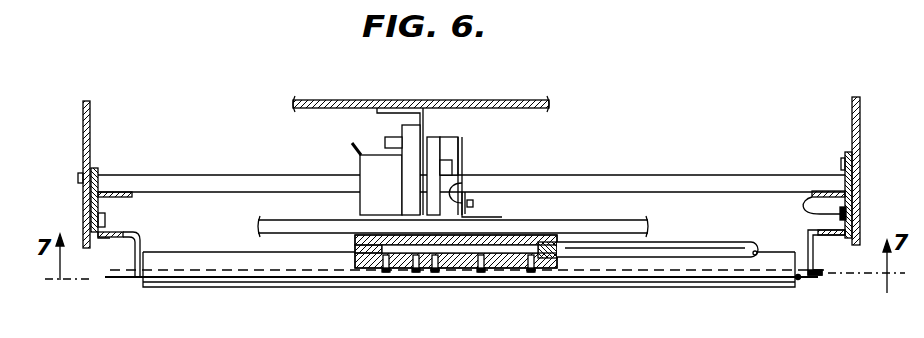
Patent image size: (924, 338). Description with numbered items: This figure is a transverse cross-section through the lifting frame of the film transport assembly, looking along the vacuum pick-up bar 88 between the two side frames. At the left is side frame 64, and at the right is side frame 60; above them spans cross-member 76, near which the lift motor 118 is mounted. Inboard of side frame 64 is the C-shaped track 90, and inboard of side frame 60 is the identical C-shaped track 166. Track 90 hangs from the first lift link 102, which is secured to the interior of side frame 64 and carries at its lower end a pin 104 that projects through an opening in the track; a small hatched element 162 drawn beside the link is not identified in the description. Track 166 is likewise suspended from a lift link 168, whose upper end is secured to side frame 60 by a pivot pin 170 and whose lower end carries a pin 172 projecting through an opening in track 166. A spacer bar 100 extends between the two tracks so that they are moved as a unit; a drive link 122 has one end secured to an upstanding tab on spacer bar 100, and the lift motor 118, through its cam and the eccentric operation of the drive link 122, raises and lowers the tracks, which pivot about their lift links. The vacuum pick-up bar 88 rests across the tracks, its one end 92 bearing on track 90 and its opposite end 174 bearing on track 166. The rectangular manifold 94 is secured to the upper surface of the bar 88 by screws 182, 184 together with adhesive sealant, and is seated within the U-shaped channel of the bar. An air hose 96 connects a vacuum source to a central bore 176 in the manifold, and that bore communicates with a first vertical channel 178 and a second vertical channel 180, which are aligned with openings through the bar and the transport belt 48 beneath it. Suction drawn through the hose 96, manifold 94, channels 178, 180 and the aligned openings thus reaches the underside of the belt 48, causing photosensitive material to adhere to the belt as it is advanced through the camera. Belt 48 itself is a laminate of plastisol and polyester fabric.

The belt 48 is at (798, 281).
The side frame 60 is at (860, 178).
The side frame 64 is at (83, 160).
The cross-member 76 is at (492, 103).
The vacuum pick-up bar 88 is at (620, 262).
The track 90 is at (100, 240).
The end of vacuum pick-up bar 92 is at (135, 228).
The manifold 94 is at (523, 235).
The air hose 96 is at (680, 250).
The spacer bar 100 is at (633, 210).
The first lift link 102 is at (94, 170).
The pin 104 is at (104, 220).
The lift motor 118 is at (362, 205).
The drive link 122 is at (457, 183).
The spacer 162 is at (100, 177).
The C-shaped track 166 is at (840, 236).
The lift link 168 is at (848, 205).
The pivot pin 170 is at (853, 160).
The pin 172 is at (806, 194).
The end of vacuum bar 174 is at (808, 228).
The central bore 176 is at (416, 273).
The first vertical channel 178 is at (386, 273).
The second vertical channel 180 is at (533, 273).
The screw 182 is at (482, 273).
The screw 184 is at (437, 273).